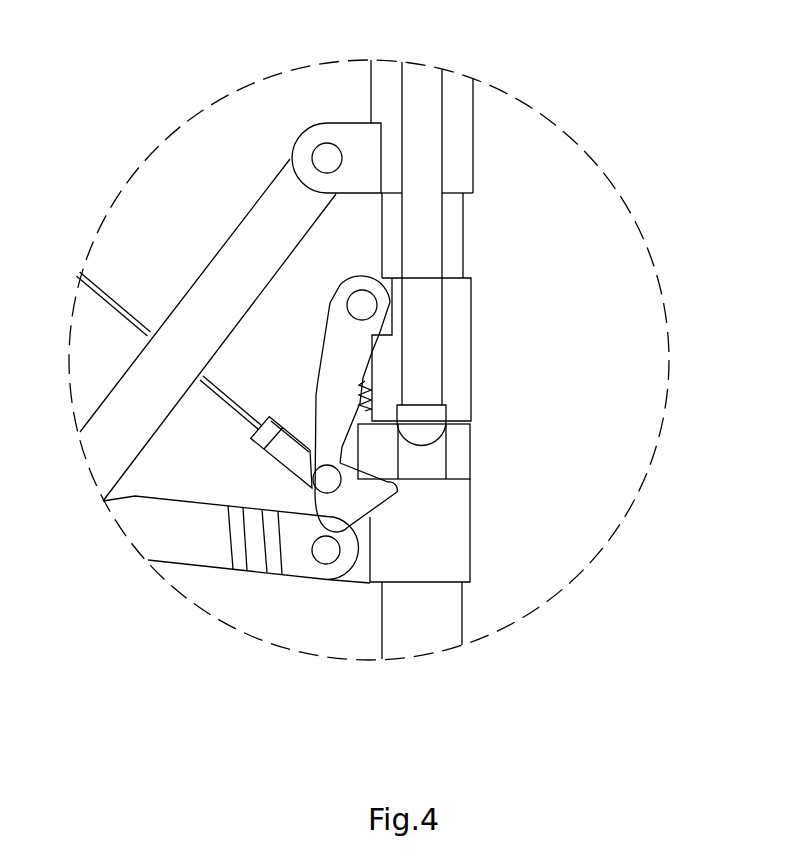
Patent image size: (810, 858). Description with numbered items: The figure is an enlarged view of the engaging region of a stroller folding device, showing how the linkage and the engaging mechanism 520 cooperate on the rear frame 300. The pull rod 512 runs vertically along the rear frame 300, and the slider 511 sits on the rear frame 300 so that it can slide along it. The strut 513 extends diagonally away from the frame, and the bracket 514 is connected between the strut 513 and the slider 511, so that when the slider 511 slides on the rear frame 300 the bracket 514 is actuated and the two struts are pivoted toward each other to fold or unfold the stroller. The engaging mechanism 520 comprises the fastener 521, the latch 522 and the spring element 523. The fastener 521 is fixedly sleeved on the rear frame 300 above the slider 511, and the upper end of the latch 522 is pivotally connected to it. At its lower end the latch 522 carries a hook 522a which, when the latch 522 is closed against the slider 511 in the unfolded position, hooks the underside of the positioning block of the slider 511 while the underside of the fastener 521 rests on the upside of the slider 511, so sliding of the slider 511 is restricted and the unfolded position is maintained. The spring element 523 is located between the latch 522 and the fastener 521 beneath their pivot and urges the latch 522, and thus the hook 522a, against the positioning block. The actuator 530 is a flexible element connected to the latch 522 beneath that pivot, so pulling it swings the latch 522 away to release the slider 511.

The rear frame 300 is at (427, 608).
The slider 511 is at (457, 455).
The pull rod 512 is at (425, 235).
The strut 513 is at (280, 237).
The bracket 514 is at (193, 533).
The engaging mechanism 520 is at (555, 296).
The fastener 521 is at (452, 318).
The latch 522 is at (343, 452).
The hook 522a is at (350, 507).
The spring element 523 is at (370, 397).
The actuator 530 is at (252, 440).